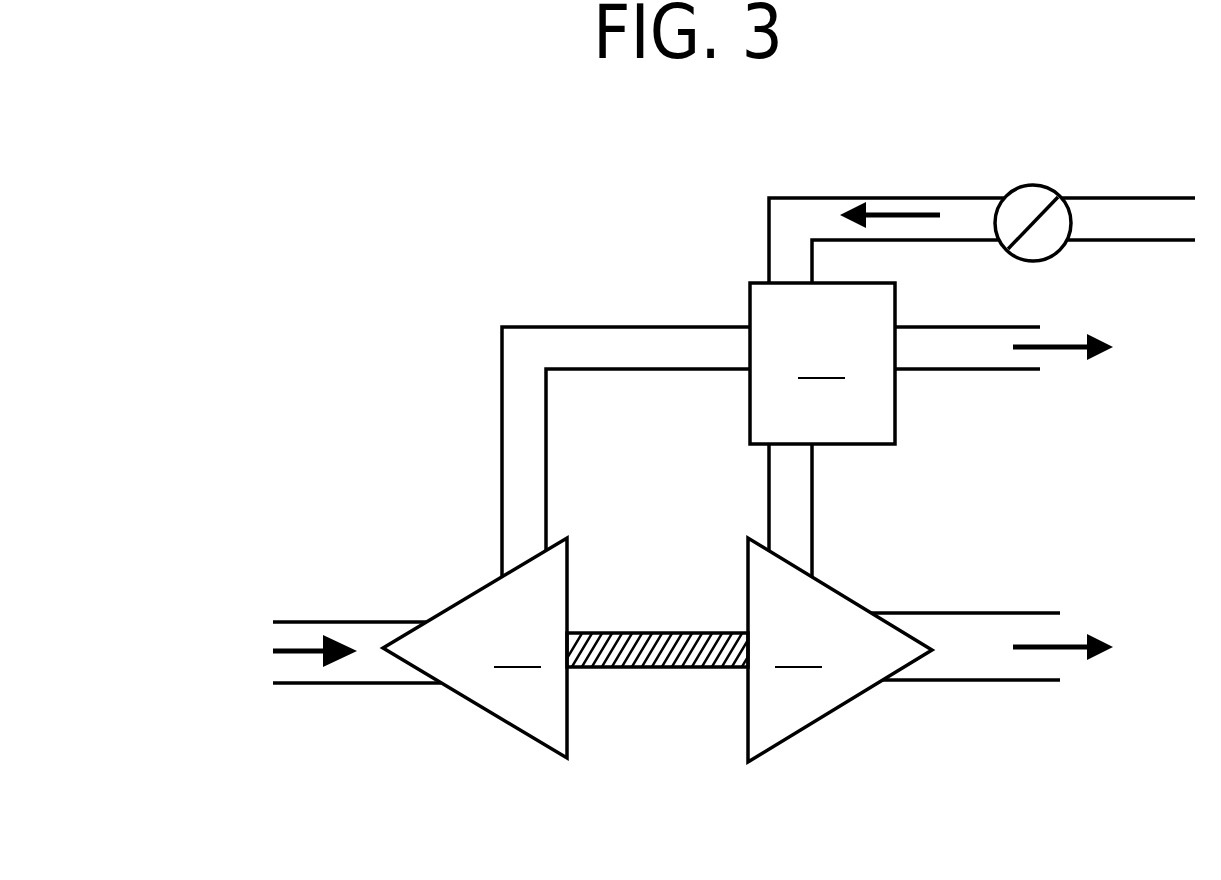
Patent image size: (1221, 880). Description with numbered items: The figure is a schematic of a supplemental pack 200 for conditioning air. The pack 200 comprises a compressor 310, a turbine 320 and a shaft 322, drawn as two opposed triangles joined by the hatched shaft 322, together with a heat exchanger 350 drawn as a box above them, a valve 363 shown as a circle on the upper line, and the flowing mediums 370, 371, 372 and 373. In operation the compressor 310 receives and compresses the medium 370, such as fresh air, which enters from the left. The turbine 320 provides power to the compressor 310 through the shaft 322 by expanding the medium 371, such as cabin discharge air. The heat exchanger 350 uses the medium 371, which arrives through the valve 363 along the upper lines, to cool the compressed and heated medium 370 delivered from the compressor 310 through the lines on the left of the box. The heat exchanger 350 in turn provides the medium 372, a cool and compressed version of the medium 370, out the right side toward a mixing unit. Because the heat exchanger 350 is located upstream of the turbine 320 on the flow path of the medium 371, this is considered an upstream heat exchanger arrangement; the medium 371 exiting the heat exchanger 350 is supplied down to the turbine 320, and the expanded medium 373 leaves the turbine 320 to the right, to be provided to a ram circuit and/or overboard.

The pack 200 is at (233, 112).
The compressor 310 is at (475, 648).
The turbine 320 is at (840, 650).
The shaft 322 is at (677, 632).
The heat exchanger 350 is at (822, 363).
The valve 363 is at (1047, 188).
The medium 370 is at (285, 648).
The medium 371 is at (868, 213).
The medium 372 is at (1045, 343).
The medium 373 is at (1045, 644).